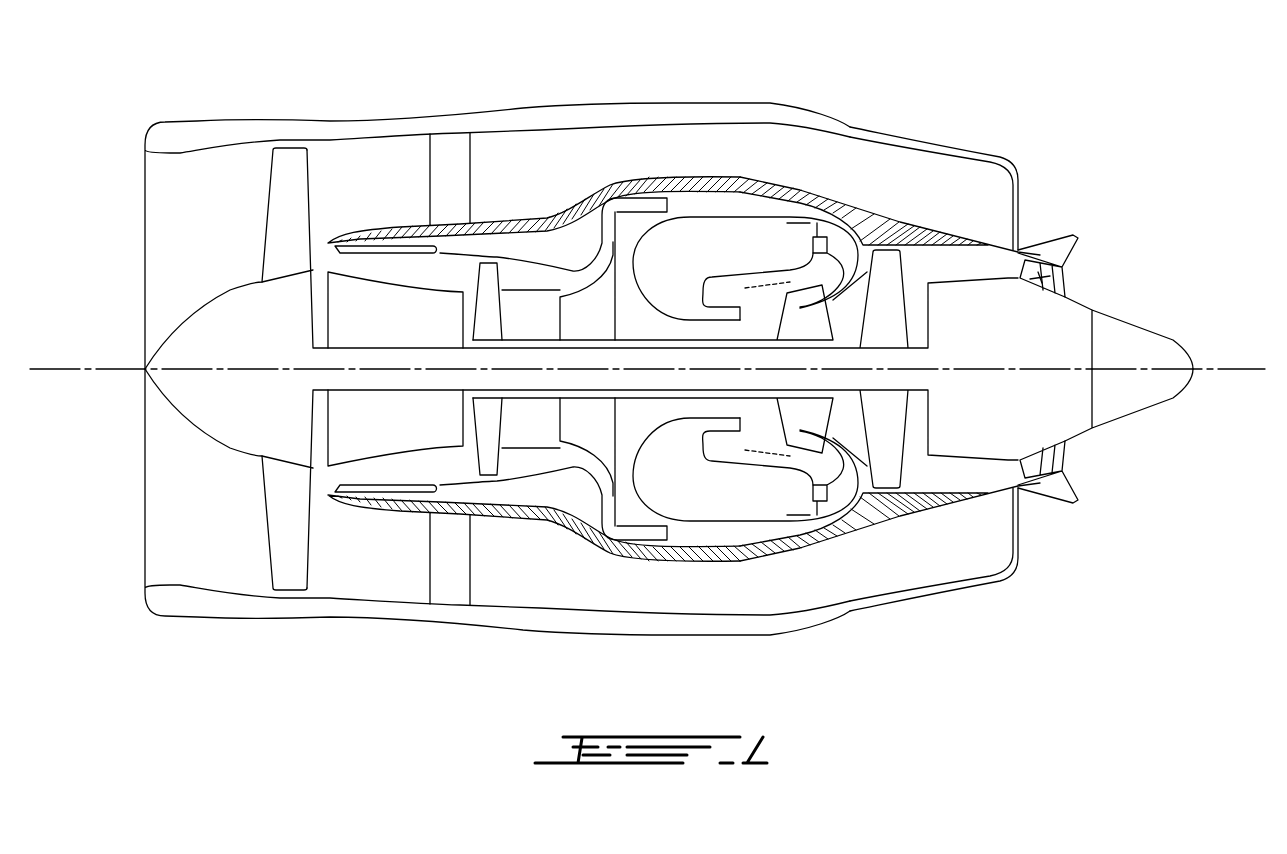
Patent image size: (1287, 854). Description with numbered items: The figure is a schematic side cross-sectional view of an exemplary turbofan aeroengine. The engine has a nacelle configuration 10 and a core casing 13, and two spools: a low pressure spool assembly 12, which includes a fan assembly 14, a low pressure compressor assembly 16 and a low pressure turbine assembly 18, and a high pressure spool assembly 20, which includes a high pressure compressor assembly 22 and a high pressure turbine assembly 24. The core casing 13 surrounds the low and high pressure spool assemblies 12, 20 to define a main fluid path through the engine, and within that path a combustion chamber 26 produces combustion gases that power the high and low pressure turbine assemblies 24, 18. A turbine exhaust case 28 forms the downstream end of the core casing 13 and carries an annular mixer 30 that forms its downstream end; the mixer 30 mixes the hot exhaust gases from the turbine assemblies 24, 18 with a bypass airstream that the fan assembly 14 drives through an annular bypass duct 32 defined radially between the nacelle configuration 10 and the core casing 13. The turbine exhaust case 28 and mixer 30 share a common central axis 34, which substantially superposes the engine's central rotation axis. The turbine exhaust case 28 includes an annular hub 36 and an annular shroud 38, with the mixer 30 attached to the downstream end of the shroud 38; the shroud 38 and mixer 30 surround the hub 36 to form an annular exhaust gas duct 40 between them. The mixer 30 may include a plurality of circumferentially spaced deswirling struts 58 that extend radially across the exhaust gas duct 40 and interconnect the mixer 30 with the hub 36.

The nacelle configuration 10 is at (618, 120).
The low pressure spool assembly 12 is at (402, 343).
The core casing 13 is at (647, 177).
The fan assembly 14 is at (267, 190).
The low pressure compressor assembly 16 is at (345, 312).
The low pressure turbine assembly 18 is at (917, 245).
The high pressure spool assembly 20 is at (540, 297).
The high pressure compressor assembly 22 is at (498, 280).
The high pressure turbine assembly 24 is at (838, 225).
The combustion chamber 26 is at (738, 254).
The turbine exhaust case 28 is at (993, 250).
The annular mixer 30 is at (1053, 257).
The annular bypass duct 32 is at (596, 589).
The central axis 34 is at (1215, 360).
The annular hub 36 is at (923, 492).
The annular shroud 38 is at (990, 493).
The annular exhaust gas duct 40 is at (1003, 470).
The deswirling struts 58 is at (1045, 283).